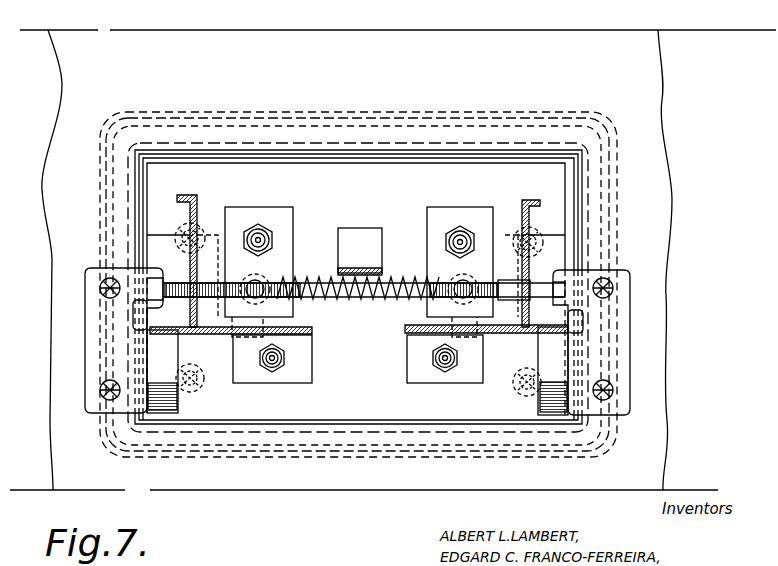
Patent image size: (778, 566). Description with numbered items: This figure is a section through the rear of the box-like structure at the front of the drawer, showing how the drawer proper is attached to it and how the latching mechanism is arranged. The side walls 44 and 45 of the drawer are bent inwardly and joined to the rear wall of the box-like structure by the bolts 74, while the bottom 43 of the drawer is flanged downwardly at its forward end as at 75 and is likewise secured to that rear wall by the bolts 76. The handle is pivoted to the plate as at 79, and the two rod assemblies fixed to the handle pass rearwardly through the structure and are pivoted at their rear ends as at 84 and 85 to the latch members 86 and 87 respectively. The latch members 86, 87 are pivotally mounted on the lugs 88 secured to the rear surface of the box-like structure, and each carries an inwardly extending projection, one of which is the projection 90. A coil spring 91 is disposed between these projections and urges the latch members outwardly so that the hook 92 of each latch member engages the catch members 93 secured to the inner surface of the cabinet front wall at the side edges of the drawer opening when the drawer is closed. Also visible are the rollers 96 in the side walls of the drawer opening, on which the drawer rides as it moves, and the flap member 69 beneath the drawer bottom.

The pivot 79 is at (100, 152).
The side wall 45 is at (198, 208).
The side wall 44 is at (531, 222).
The bolt 74 is at (259, 228).
The pivot 85 is at (268, 278).
The pivot 84 is at (467, 284).
The flap member 69 is at (452, 290).
The latch member 87 is at (185, 283).
The projection 90 is at (280, 280).
The hook 92 is at (155, 288).
The latch member 86 is at (560, 266).
The coil spring 91 is at (358, 302).
The catch member 93 is at (90, 296).
The flange 75 is at (297, 346).
The bolt 76 is at (285, 366).
The bottom 43 is at (226, 343).
The lug 88 is at (182, 300).
The roller 96 is at (160, 393).